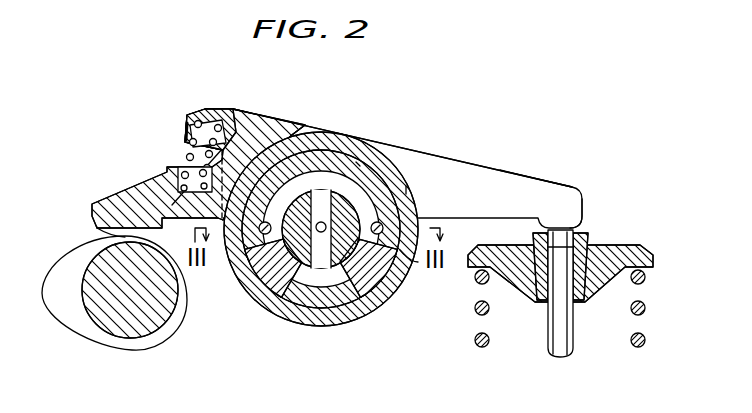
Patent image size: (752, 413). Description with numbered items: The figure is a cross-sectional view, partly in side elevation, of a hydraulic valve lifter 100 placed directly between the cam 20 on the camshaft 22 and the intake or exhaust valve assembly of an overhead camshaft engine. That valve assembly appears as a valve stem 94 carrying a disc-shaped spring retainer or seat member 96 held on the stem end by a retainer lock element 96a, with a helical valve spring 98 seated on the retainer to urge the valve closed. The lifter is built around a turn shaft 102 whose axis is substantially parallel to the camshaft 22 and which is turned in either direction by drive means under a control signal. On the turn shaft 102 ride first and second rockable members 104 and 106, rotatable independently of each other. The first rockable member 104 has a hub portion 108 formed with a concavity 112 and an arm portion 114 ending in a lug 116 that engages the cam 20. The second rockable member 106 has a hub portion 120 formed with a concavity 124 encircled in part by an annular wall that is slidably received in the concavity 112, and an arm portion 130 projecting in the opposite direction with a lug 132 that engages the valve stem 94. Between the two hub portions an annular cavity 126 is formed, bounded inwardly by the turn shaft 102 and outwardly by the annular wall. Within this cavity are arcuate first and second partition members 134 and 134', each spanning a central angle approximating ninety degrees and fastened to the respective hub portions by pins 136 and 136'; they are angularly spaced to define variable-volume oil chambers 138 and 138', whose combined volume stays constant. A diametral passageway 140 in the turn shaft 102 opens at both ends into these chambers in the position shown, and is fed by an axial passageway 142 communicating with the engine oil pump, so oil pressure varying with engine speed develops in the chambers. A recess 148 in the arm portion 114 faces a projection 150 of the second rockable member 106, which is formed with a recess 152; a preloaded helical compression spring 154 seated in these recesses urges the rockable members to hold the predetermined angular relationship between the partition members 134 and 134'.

The cam 20 is at (68, 262).
The camshaft 22 is at (110, 325).
The valve stem 94 is at (553, 343).
The spring retainer or seat member 96 is at (600, 288).
The retainer lock element 96a is at (534, 255).
The helical valve spring 98 is at (478, 346).
The hydraulic valve lifter 100 is at (361, 110).
The turn shaft 102 is at (349, 285).
The first rockable member 104 is at (259, 138).
The second rockable member 106 is at (436, 152).
The hub portion 108 is at (332, 130).
The concavity 112 is at (295, 145).
The arm portion 114 is at (130, 195).
The lug 116 is at (97, 232).
The hub portion 120 is at (406, 262).
The concavity 124 is at (356, 162).
The annular cavity 126 is at (406, 190).
The arm portion 130 is at (493, 177).
The lug 132 is at (612, 208).
The first partition member 134 is at (270, 293).
The second partition member 134' is at (389, 202).
The pin 136 is at (232, 273).
The pin 136' is at (399, 282).
The variable-volume oil chamber 138 is at (330, 190).
The variable-volume oil chamber 138' is at (349, 315).
The diametral passageway 140 is at (321, 232).
The axial passageway 142 is at (300, 290).
The recess 148 is at (180, 168).
The projection 150 is at (230, 95).
The recess 152 is at (188, 124).
The helical compression spring 154 is at (188, 155).